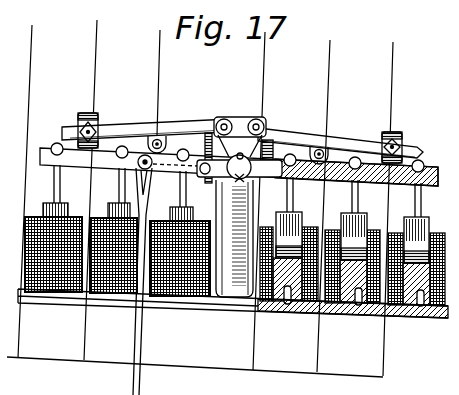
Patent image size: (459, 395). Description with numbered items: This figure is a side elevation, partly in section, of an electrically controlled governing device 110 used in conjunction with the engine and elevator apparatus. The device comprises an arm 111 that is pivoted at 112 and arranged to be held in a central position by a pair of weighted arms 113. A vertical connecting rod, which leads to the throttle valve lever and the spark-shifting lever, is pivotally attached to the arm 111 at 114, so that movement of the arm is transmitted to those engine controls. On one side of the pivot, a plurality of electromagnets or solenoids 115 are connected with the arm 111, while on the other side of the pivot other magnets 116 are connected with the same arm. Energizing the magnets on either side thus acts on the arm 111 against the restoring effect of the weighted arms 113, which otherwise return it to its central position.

The electrically controlled governing device 110 is at (235, 135).
The arm 111 is at (78, 156).
The pivot 112 is at (231, 174).
The weighted arms 113 is at (125, 127).
The pivotal attachment 114 is at (135, 169).
The electromagnets or solenoids 115 is at (107, 272).
The magnets 116 is at (430, 316).